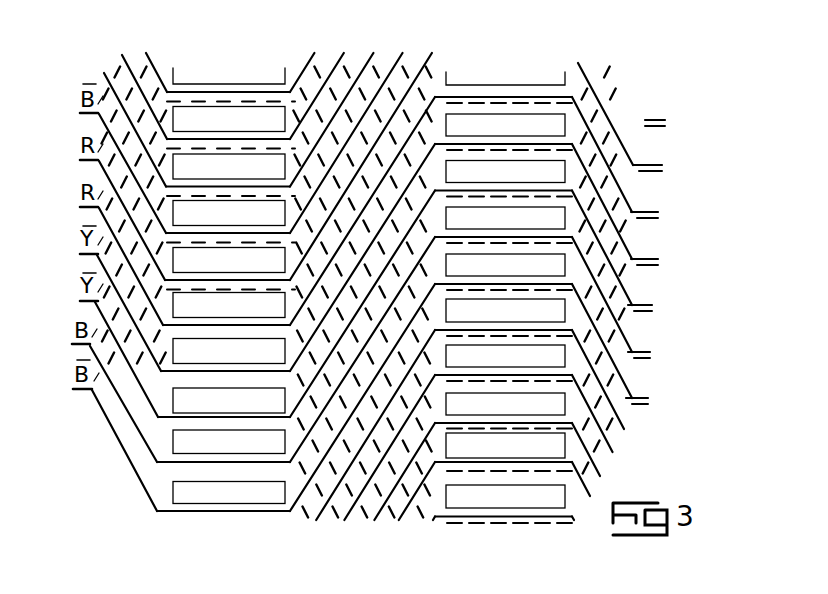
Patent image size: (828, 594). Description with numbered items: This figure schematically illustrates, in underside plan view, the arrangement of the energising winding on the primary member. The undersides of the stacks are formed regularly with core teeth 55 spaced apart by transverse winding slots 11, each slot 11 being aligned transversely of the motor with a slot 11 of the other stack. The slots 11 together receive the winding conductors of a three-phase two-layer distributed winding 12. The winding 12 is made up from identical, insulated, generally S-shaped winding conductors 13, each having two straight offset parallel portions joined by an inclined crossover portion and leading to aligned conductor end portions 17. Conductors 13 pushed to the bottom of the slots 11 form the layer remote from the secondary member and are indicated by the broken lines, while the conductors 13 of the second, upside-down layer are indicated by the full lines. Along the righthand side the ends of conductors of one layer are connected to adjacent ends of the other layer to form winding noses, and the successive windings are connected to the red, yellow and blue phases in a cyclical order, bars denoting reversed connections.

The transverse winding slot 11 is at (500, 142).
The three-phase two-layer distributed winding 12 is at (631, 267).
The winding conductor 13 is at (631, 208).
The conductor end portion 17 is at (641, 316).
The core tooth 55 is at (452, 497).